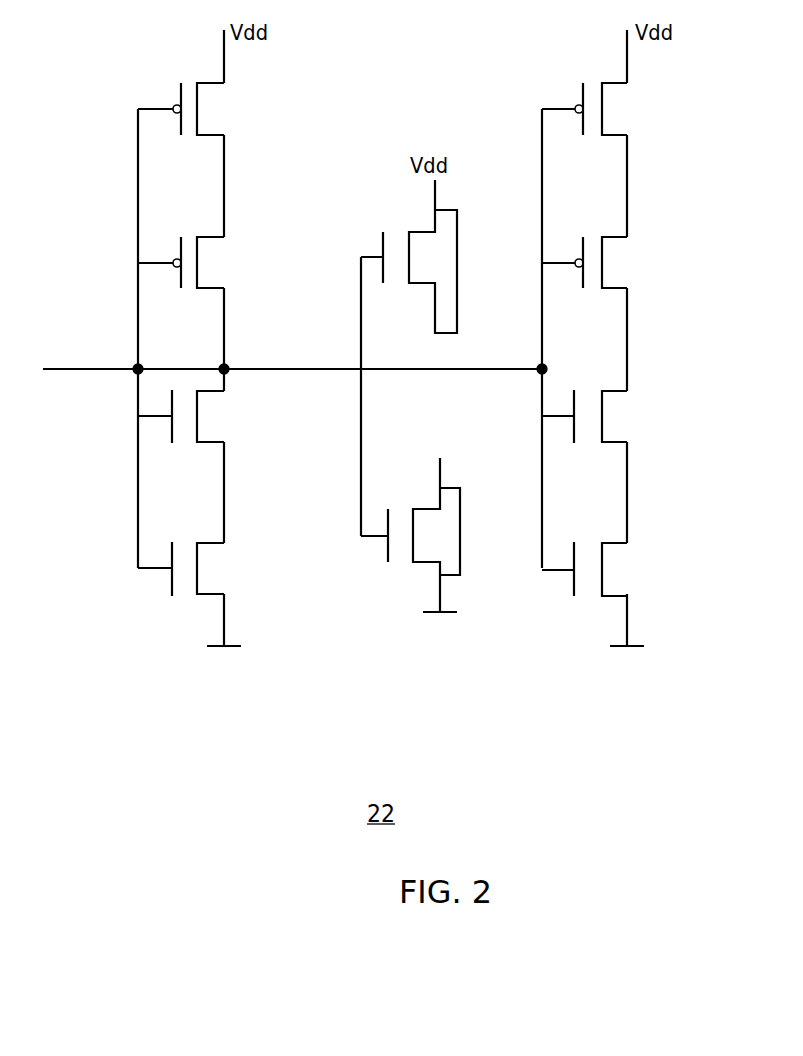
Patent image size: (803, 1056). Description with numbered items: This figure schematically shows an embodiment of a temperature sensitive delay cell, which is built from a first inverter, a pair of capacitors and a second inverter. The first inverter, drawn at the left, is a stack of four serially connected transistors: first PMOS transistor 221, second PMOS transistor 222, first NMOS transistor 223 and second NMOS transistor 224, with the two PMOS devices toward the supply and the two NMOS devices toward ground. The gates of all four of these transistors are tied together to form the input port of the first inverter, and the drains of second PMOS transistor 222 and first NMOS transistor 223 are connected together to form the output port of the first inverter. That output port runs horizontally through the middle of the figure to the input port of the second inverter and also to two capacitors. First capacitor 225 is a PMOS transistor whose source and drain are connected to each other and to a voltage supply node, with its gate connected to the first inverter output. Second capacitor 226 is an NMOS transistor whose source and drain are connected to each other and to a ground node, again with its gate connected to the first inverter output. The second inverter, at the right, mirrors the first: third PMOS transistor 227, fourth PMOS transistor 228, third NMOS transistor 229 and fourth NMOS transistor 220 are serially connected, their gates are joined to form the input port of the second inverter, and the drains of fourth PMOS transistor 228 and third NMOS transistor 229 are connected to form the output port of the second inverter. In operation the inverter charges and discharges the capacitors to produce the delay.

The fourth NMOS transistor 220 is at (627, 543).
The first PMOS transistor 221 is at (224, 83).
The second PMOS transistor 222 is at (224, 237).
The first NMOS transistor 223 is at (224, 391).
The second NMOS transistor 224 is at (224, 543).
The first capacitor 225 is at (409, 232).
The second capacitor 226 is at (440, 475).
The third PMOS transistor 227 is at (627, 83).
The fourth PMOS transistor 228 is at (627, 237).
The third NMOS transistor 229 is at (627, 391).